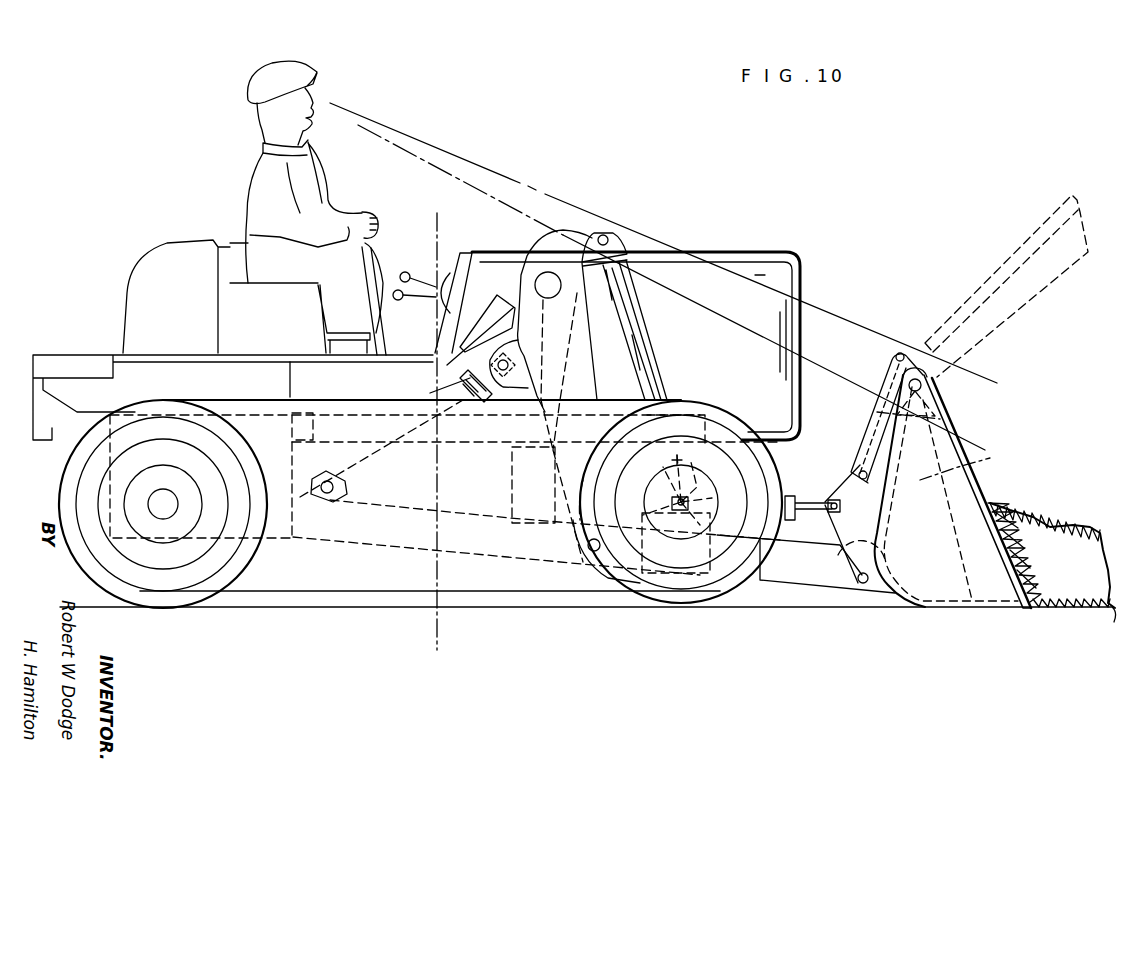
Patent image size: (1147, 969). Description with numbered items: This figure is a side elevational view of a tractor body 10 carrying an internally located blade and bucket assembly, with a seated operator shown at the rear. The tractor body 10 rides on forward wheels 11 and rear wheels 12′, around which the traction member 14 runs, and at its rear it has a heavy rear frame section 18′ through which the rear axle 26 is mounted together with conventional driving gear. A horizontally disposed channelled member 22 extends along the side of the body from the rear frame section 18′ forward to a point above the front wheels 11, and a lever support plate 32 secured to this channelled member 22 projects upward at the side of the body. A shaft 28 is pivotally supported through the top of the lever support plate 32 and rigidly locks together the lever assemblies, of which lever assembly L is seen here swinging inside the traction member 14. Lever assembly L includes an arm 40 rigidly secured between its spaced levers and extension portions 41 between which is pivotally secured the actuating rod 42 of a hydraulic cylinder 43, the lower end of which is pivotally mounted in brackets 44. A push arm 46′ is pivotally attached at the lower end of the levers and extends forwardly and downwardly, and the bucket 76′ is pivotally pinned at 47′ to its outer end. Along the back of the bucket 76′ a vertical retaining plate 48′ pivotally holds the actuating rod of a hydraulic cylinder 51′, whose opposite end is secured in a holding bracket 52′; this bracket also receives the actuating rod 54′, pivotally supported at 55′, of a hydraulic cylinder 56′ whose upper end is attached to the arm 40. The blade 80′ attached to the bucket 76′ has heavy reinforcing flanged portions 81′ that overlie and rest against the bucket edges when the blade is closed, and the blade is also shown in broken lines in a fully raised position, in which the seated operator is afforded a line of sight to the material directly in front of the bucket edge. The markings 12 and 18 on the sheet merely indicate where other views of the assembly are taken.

The tractor body 10 is at (30, 448).
The forward wheels 11 is at (608, 577).
The section line 12 is at (447, 653).
The rear wheels 12′ is at (238, 575).
The traction member 14 is at (333, 603).
The rear frame section 18′ is at (292, 458).
The channelled member 22 is at (308, 403).
The rear axle 26 is at (165, 513).
The shaft 28 is at (550, 284).
The lever support plate 32 is at (512, 292).
The arm 40 is at (585, 230).
The extension portions 41 is at (518, 382).
The actuating rod 42 is at (478, 370).
The hydraulic cylinder 43 is at (398, 466).
The brackets 44 is at (352, 497).
The push arm 46′ is at (790, 573).
The pivot pin 47′ is at (862, 585).
The vertical retaining plate 48′ is at (850, 465).
The hydraulic cylinder 51′ is at (788, 495).
The holding bracket 52′ is at (708, 500).
The actuating rod 54′ is at (686, 460).
The pivot support 55′ is at (706, 483).
The hydraulic cylinder 56′ is at (638, 322).
The bucket 76′ is at (937, 590).
The blade 80′ is at (990, 503).
The flanged portions 81′ is at (962, 437).
The dimension 18 is at (993, 470).
The lever assembly L is at (563, 233).